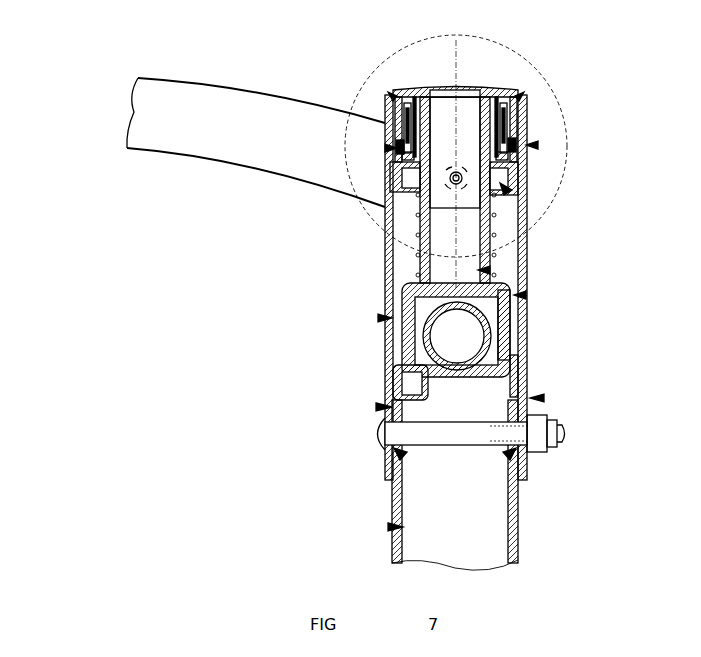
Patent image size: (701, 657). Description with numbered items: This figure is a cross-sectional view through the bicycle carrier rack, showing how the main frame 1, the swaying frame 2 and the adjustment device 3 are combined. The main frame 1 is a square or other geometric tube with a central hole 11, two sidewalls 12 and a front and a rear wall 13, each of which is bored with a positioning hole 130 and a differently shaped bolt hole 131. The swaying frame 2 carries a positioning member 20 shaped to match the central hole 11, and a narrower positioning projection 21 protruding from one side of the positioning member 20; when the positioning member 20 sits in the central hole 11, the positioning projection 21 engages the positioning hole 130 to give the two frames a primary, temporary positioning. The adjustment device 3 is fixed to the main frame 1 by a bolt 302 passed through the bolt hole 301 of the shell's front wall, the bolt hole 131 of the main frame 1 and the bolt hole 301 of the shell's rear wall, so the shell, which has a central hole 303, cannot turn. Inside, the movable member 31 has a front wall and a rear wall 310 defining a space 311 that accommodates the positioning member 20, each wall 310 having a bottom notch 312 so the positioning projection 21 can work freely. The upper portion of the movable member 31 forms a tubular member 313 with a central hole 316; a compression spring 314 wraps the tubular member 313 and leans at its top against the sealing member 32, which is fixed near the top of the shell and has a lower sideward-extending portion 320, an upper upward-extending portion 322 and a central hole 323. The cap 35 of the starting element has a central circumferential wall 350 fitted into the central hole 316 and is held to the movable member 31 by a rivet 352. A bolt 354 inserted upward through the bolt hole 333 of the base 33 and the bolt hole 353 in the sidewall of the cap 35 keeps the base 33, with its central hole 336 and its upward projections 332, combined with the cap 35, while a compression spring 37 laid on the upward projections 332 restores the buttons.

The main frame 1 is at (517, 538).
The swaying frame 2 is at (178, 152).
The adjustment device 3 is at (428, 72).
The central hole 11 is at (390, 527).
The sidewalls 12 is at (493, 515).
The front and rear wall 13 is at (392, 497).
The positioning member 20 is at (455, 378).
The positioning projection 21 is at (425, 385).
The movable member 31 is at (387, 298).
The sealing member 32 is at (533, 222).
The base 33 is at (530, 168).
The cap 35 is at (460, 88).
The compression spring 37 is at (396, 118).
The positioning hole 130 is at (378, 407).
The bolt hole 131 is at (403, 456).
The bolt hole 301 is at (514, 452).
The bolt 302 is at (383, 447).
The central hole 303 is at (380, 318).
The front wall and rear wall 310 is at (403, 337).
The space 311 is at (526, 295).
The notch 312 is at (420, 379).
The tubular member 313 is at (428, 262).
The compression spring 314 is at (416, 232).
The central hole 316 is at (490, 270).
The lower sideward-extending portion 320 is at (535, 185).
The upper upward-extending portion 322 is at (495, 92).
The central hole 323 is at (508, 190).
The upward projections 332 is at (395, 160).
The bolt hole 333 is at (385, 148).
The central hole 336 is at (412, 92).
The central circumferential wall 350 is at (455, 190).
The rivet 352 is at (456, 170).
The bolt hole 353 is at (392, 95).
The bolt 354 is at (393, 113).